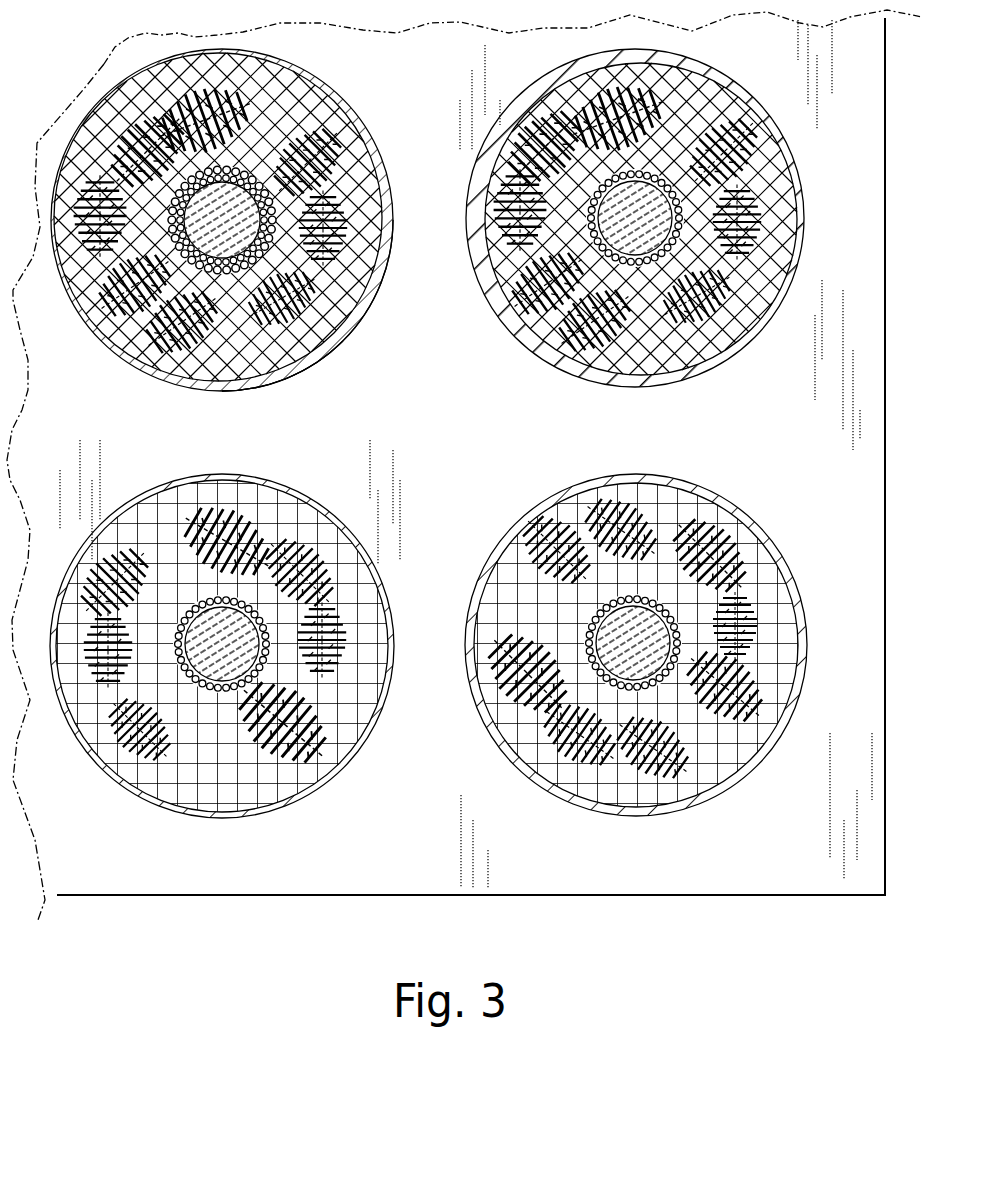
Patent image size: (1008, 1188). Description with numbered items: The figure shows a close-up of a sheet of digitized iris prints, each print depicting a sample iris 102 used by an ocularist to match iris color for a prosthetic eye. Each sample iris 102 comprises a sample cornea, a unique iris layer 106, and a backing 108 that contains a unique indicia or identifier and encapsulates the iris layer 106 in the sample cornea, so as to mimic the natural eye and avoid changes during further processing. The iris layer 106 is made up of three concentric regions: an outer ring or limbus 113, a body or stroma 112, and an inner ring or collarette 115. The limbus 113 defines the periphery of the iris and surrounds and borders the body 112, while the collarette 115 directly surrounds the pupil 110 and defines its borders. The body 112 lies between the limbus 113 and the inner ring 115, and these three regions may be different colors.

The sample iris 102 is at (108, 348).
The iris layer 106 is at (100, 99).
The backing 108 is at (273, 377).
The pupil 110 is at (237, 196).
The body 112 is at (162, 375).
The limbus 113 is at (355, 312).
The collarette 115 is at (272, 198).